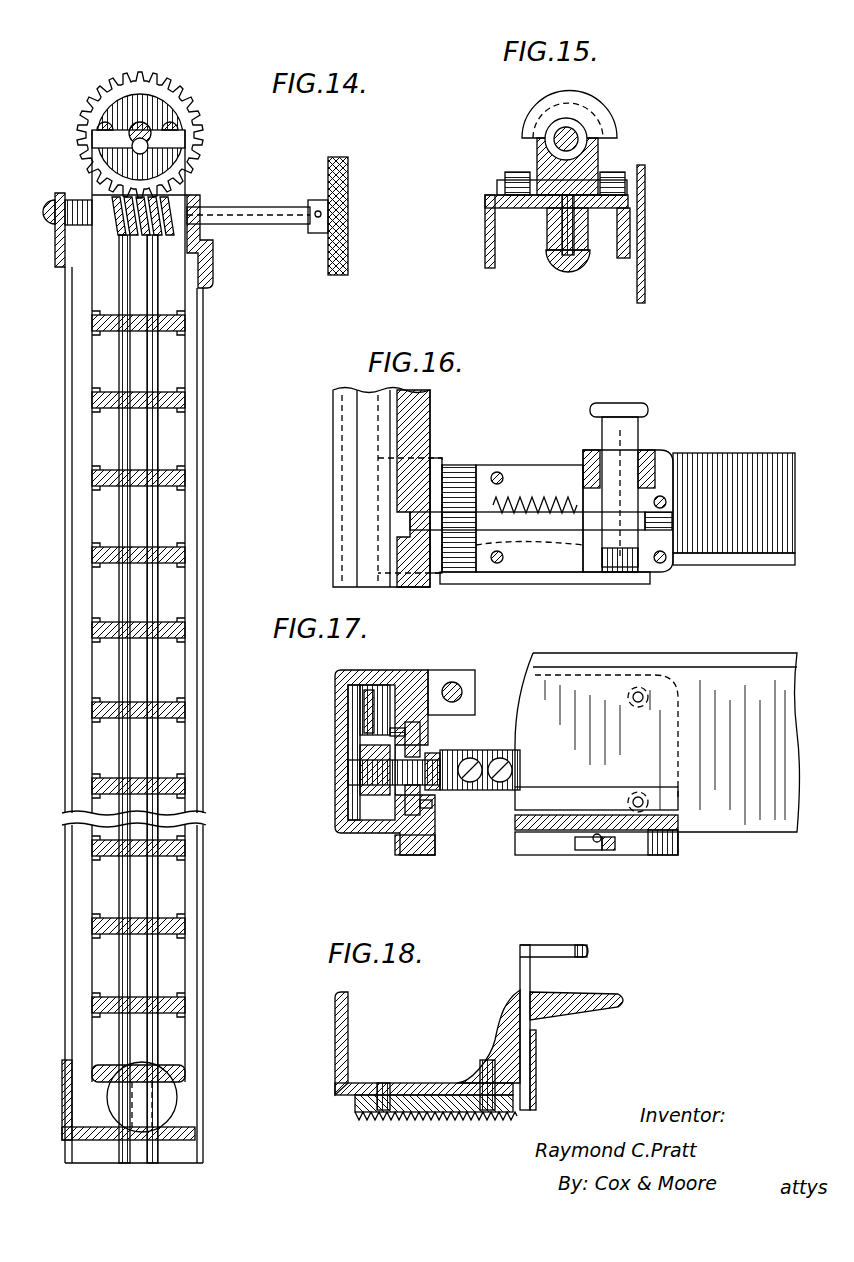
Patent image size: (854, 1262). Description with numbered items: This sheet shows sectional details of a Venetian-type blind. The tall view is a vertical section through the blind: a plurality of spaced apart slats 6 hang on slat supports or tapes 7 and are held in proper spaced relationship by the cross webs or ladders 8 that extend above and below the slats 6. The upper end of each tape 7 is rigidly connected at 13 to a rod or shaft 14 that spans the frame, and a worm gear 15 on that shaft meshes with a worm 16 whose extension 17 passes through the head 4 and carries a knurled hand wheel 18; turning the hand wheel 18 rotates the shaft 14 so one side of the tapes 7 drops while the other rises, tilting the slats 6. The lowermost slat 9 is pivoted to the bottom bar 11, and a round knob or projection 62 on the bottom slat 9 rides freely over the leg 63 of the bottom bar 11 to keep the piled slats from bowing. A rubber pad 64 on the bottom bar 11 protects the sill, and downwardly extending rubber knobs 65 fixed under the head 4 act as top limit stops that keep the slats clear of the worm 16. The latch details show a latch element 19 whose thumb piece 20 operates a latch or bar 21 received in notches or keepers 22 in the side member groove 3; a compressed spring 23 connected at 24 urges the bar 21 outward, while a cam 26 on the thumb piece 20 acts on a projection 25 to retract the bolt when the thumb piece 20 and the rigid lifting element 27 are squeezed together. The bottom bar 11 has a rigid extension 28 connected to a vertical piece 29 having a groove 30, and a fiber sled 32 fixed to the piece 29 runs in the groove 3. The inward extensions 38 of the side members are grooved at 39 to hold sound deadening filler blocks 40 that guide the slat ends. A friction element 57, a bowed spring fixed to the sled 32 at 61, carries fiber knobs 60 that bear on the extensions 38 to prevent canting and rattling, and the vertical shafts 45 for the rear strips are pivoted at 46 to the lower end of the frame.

In FIG. 16, the side member groove 3 is at (333, 416).
In FIG. 17, the side member groove 3 is at (340, 806).
In FIG. 14, the head 4 is at (215, 254).
In FIG. 15, the head 4 is at (495, 196).
In FIG. 14, the slats 6 is at (187, 400).
In FIG. 14, the slat supports or tapes 7 is at (203, 295).
In FIG. 14, the cross webs or ladders 8 is at (190, 384).
In FIG. 14, the bottom slat 9 is at (187, 1076).
In FIG. 14, the bottom bar 11 is at (170, 1126).
In FIG. 16, the bottom bar 11 is at (733, 462).
In FIG. 17, the bottom bar 11 is at (779, 655).
In FIG. 18, the bottom bar 11 is at (350, 1031).
In FIG. 14, the connection 13 is at (122, 140).
In FIG. 14, the rod or shaft 14 is at (148, 128).
In FIG. 15, the rod or shaft 14 is at (585, 145).
In FIG. 14, the worm gear 15 is at (186, 115).
In FIG. 14, the worm 16 is at (140, 215).
In FIG. 14, the worm extension 17 is at (232, 207).
In FIG. 14, the knurled hand wheel 18 is at (338, 157).
In FIG. 16, the latch element 19 is at (642, 432).
In FIG. 17, the latch element 19 is at (575, 842).
In FIG. 18, the latch element 19 is at (534, 992).
In FIG. 16, the thumb piece 20 is at (625, 405).
In FIG. 17, the thumb piece 20 is at (606, 846).
In FIG. 18, the thumb piece 20 is at (575, 950).
In FIG. 16, the latch or bar 21 is at (548, 526).
In FIG. 17, the latch or bar 21 is at (520, 843).
In FIG. 18, the latch or bar 21 is at (505, 1056).
In FIG. 16, the notches or keepers 22 is at (400, 518).
In FIG. 16, the compressed spring 23 is at (520, 498).
In FIG. 16, the spring connection 24 is at (478, 500).
In FIG. 16, the projection 25 is at (652, 521).
In FIG. 16, the cam 26 is at (640, 496).
In FIG. 18, the rigid lifting element 27 is at (570, 1010).
In FIG. 17, the rigid extension 28 is at (440, 770).
In FIG. 17, the vertical piece 29 is at (355, 766).
In FIG. 17, the groove 30 is at (378, 792).
In FIG. 17, the fiber piece or sled 32 is at (355, 791).
In FIG. 17, the inward extensions 38 is at (435, 735).
In FIG. 17, the grooves 39 is at (400, 732).
In FIG. 14, the filler blocks 40 is at (124, 290).
In FIG. 17, the filler blocks 40 is at (470, 742).
In FIG. 17, the vertical shafts 45 is at (461, 684).
In FIG. 17, the pivot 46 is at (446, 680).
In FIG. 17, the friction element 57 is at (370, 702).
In FIG. 17, the fiber knobs 60 is at (380, 690).
In FIG. 17, the spring fastening 61 is at (352, 712).
In FIG. 14, the round knob or projection 62 is at (122, 1106).
In FIG. 14, the leg 63 is at (195, 1136).
In FIG. 16, the leg 63 is at (771, 566).
In FIG. 17, the leg 63 is at (715, 668).
In FIG. 18, the leg 63 is at (413, 1083).
In FIG. 16, the rubber pad 64 is at (630, 582).
In FIG. 18, the rubber pad 64 is at (440, 1118).
In FIG. 15, the rubber knobs 65 is at (586, 262).